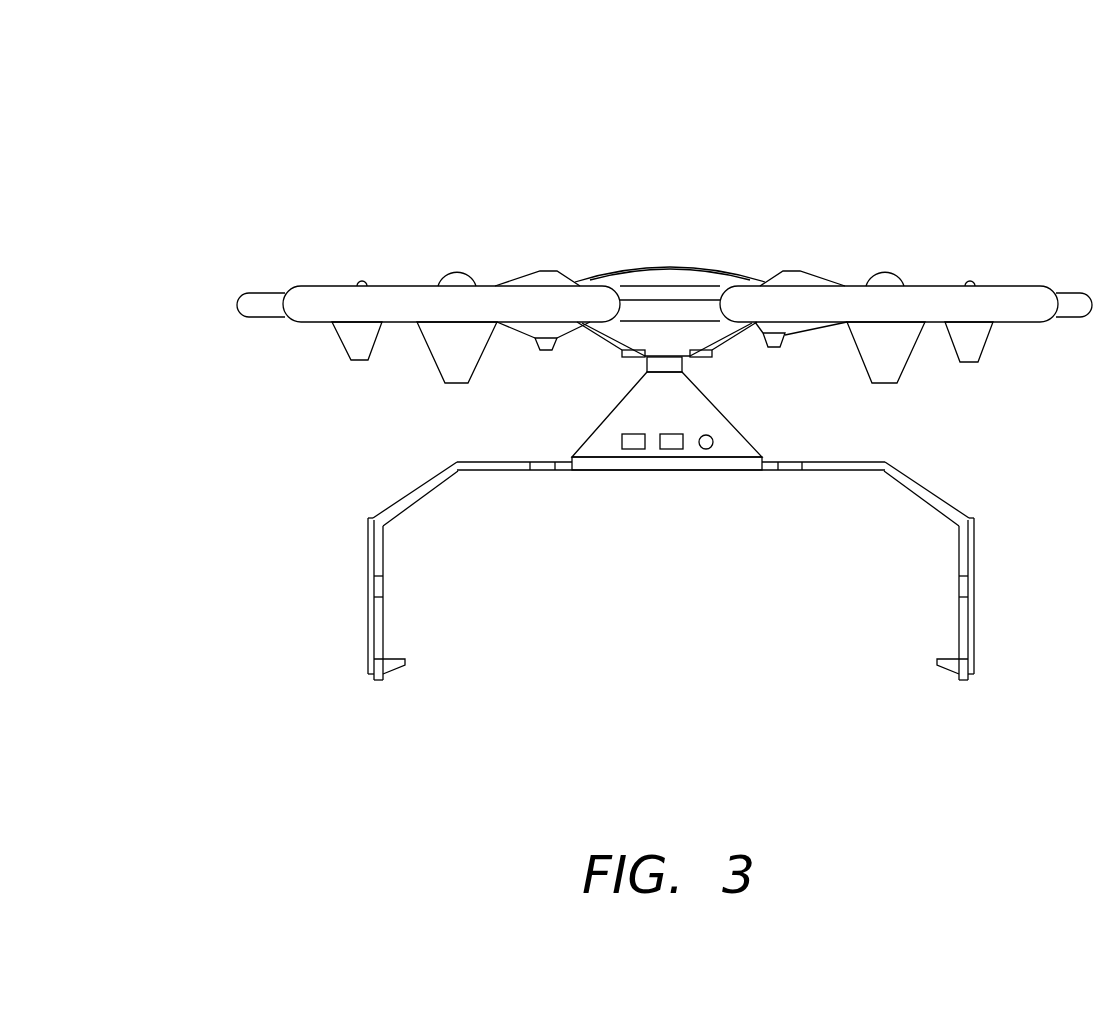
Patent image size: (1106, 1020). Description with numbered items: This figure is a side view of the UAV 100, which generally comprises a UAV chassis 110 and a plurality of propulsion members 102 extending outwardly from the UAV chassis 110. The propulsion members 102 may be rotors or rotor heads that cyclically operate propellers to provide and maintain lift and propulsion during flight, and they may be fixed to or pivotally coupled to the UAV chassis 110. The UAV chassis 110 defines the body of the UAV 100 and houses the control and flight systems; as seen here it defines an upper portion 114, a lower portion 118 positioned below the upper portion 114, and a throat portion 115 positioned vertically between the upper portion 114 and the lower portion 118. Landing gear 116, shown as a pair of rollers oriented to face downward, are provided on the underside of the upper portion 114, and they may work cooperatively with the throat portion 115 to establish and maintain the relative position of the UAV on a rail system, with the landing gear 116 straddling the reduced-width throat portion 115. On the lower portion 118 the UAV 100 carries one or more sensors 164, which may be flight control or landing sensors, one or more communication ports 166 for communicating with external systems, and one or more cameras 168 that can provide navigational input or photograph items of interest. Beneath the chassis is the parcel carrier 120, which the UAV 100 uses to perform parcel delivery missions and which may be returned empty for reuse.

The UAV 100 is at (203, 82).
The propulsion members 102 is at (260, 300).
The UAV chassis 110 is at (635, 232).
The upper portion 114 is at (690, 333).
The throat portion 115 is at (682, 364).
The landing gear 116 is at (620, 352).
The lower portion 118 is at (630, 414).
The parcel carrier 120 is at (640, 484).
The sensors 164 is at (638, 439).
The communication ports 166 is at (673, 442).
The cameras 168 is at (708, 445).